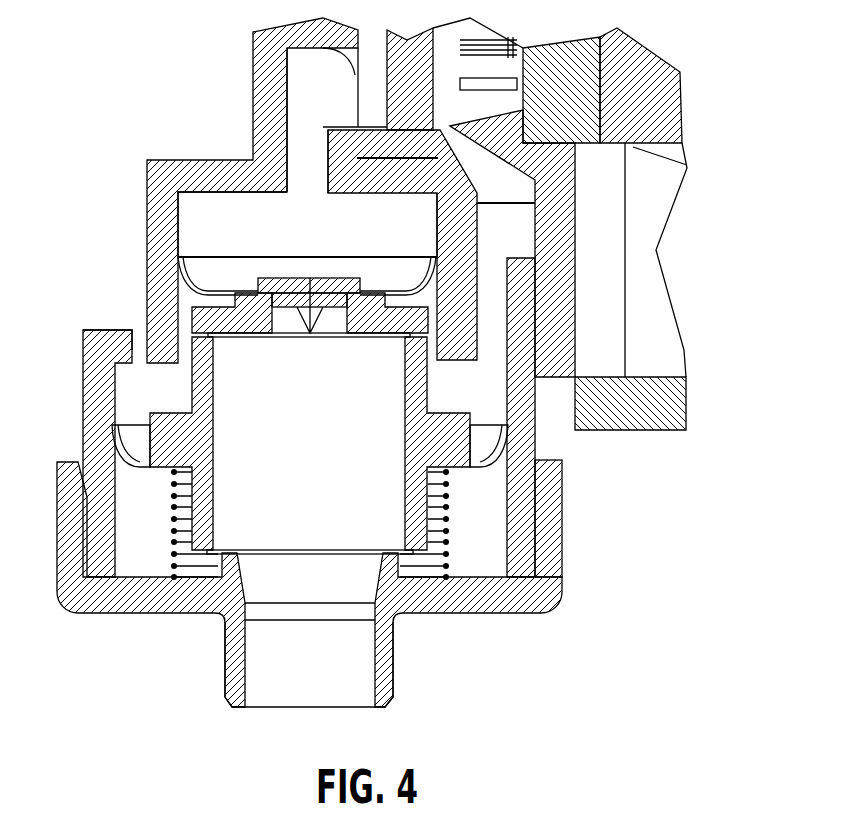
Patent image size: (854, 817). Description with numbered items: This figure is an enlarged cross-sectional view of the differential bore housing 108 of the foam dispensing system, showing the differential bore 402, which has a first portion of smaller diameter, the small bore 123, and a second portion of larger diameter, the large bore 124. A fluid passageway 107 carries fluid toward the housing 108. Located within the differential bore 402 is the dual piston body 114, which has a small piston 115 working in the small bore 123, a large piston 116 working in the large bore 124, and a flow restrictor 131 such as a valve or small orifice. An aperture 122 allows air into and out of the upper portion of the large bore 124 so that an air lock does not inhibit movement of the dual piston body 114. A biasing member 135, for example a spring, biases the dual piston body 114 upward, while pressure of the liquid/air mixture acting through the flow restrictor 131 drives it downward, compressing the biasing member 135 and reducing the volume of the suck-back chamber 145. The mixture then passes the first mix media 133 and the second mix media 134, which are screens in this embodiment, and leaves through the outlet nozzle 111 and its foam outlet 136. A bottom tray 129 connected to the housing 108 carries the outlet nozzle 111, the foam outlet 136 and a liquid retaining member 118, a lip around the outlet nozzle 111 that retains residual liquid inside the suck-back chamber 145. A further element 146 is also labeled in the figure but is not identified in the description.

The differential bore 402 is at (712, 108).
The fluid passageway 107 is at (305, 123).
The small bore 123 is at (178, 212).
The differential bore housing 108 is at (147, 228).
The small piston 115 is at (182, 268).
The aperture 122 is at (130, 328).
The first mix media 133 is at (285, 340).
The large piston 116 is at (113, 447).
The second mix media 134 is at (268, 550).
The large bore 124 is at (175, 513).
The biasing member 135 is at (175, 553).
The liquid retaining member 118 is at (398, 553).
The outlet nozzle 111 is at (395, 660).
The foam outlet 136 is at (320, 707).
The bottom tray 129 is at (550, 592).
The suck-back chamber 145 is at (480, 553).
The retaining ring 146 is at (505, 517).
The dual piston body 114 is at (597, 400).
The flow restrictor 131 is at (428, 383).